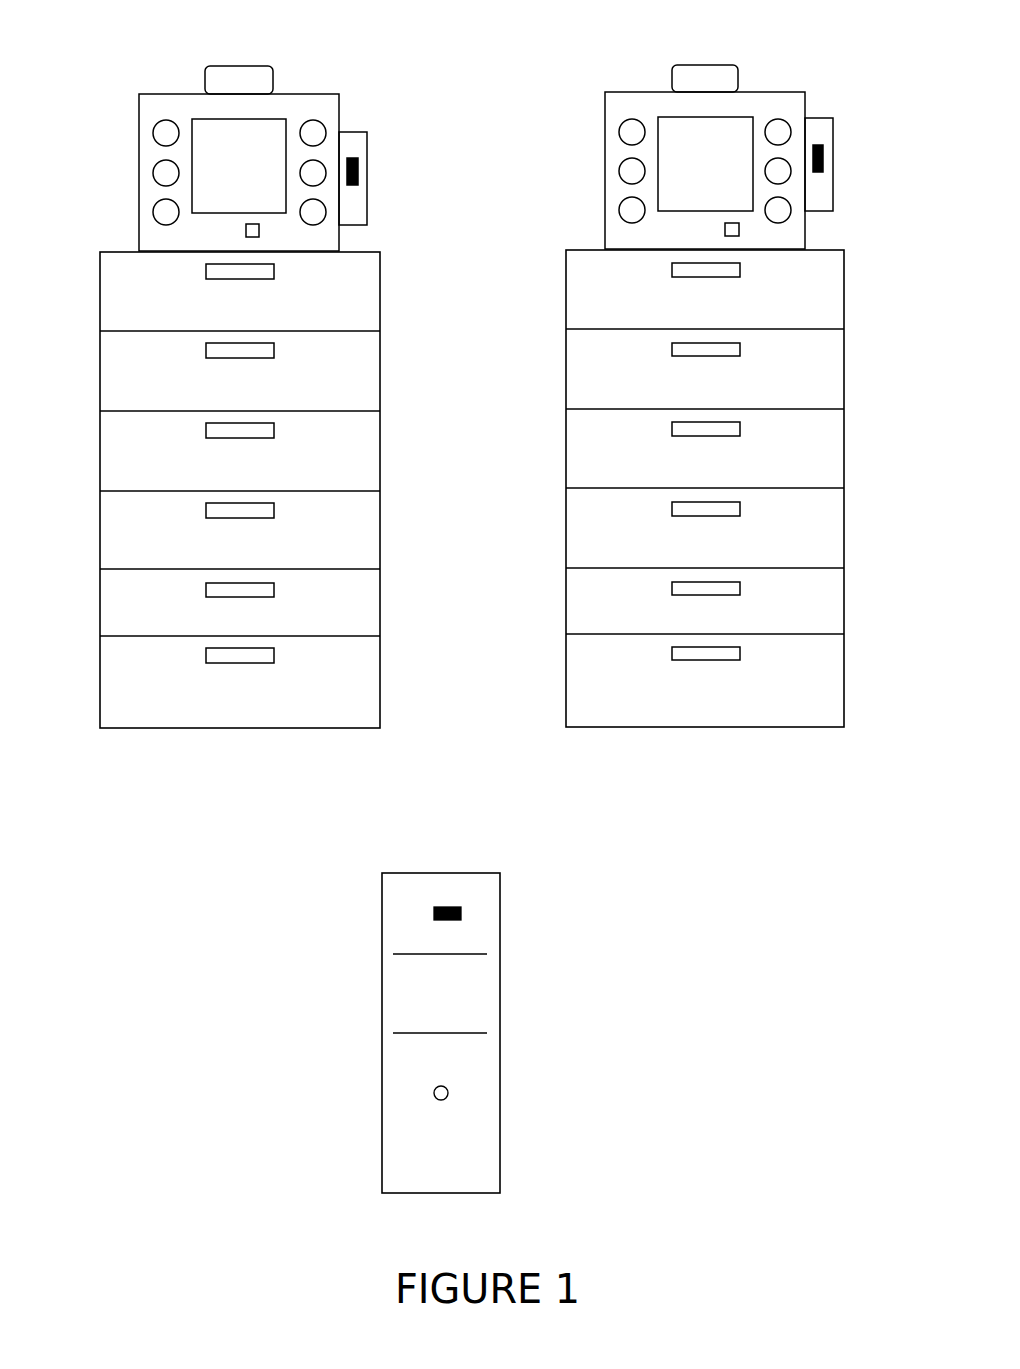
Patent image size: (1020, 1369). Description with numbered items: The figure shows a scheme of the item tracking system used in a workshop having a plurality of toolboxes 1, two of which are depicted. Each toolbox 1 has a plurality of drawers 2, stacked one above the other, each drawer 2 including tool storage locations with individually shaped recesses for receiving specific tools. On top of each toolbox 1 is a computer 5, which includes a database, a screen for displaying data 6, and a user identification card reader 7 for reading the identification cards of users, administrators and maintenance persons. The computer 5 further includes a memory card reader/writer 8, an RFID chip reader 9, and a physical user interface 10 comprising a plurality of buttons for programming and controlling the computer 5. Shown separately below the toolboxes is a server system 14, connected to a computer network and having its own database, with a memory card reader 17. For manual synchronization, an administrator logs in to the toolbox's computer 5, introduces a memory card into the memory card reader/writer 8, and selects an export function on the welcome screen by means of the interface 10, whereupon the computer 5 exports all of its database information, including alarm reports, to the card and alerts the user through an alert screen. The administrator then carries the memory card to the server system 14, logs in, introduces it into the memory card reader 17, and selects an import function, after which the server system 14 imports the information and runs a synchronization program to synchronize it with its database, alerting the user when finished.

The toolbox 1 is at (180, 729).
The drawer 2 is at (472, 493).
The computer 5 is at (179, 92).
The screen for displaying data 6 is at (472, 165).
The user identification card reader 7 is at (275, 65).
The memory card reader/writer 8 is at (369, 145).
The RFID chip reader 9 is at (276, 239).
The physical user interface 10 is at (329, 118).
The server system 14 is at (441, 1033).
The memory card reader 17 is at (474, 913).